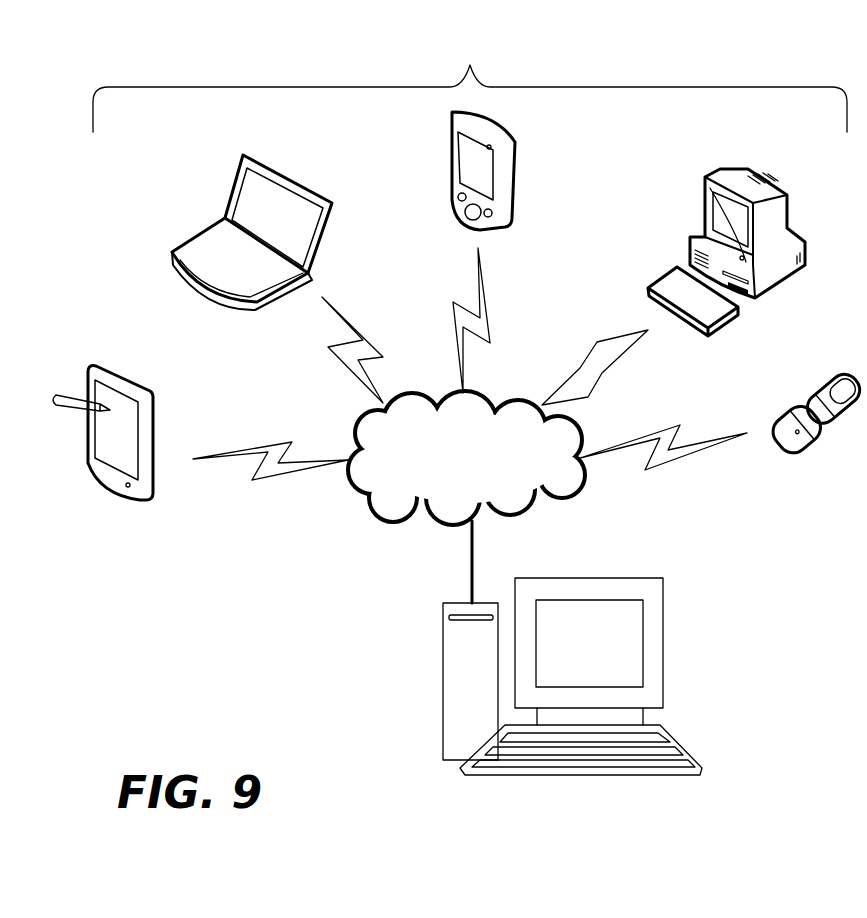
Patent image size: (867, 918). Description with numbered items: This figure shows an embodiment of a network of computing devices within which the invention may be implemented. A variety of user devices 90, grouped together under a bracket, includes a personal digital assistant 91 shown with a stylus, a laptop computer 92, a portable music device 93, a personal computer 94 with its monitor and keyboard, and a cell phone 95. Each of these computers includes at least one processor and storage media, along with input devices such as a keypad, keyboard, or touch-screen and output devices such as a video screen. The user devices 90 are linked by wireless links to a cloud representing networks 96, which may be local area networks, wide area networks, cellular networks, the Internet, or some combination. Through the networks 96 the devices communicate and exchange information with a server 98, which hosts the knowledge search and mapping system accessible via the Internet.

The user devices 90 is at (470, 81).
The personal digital assistant (PDA) 91 is at (103, 457).
The laptop computer 92 is at (215, 274).
The portable music device 93 is at (456, 171).
The personal computer 94 is at (726, 252).
The cell phone 95 is at (817, 429).
The networks 96 is at (447, 473).
The server 98 is at (574, 666).